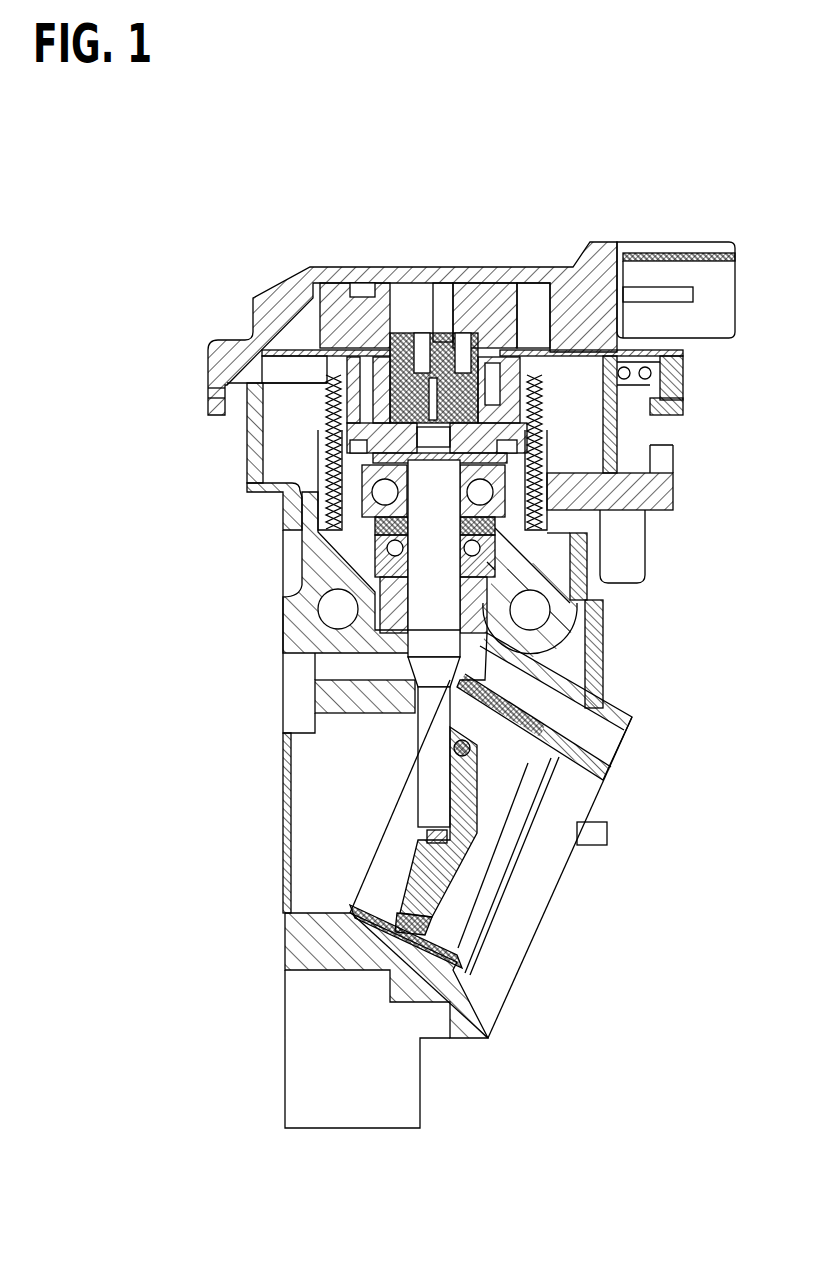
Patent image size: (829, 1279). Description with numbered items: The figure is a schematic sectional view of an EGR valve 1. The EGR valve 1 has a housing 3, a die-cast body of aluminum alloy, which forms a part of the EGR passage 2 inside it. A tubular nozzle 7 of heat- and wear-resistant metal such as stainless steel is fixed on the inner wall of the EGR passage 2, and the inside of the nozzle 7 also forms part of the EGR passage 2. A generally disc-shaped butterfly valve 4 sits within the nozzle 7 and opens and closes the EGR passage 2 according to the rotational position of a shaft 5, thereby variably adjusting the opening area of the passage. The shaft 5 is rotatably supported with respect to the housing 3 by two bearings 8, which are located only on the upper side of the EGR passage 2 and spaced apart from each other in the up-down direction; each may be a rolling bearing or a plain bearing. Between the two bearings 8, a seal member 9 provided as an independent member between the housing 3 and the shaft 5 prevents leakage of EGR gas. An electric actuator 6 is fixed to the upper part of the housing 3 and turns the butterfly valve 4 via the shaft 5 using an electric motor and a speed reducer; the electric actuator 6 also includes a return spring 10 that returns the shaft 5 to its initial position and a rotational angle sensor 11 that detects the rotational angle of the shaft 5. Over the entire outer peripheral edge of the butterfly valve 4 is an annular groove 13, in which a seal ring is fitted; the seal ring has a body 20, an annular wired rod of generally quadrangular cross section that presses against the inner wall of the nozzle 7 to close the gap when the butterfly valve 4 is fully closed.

The EGR valve 1 is at (208, 237).
The EGR passage 2 is at (533, 897).
The housing 3 is at (632, 719).
The butterfly valve 4 is at (490, 953).
The shaft 5 is at (428, 730).
The electric actuator 6 is at (533, 258).
The nozzle 7 is at (557, 843).
The bearings 8 is at (348, 490).
The seal member 9 is at (312, 535).
The return spring 10 is at (330, 440).
The rotational angle sensor 11 is at (368, 333).
The annular groove 13 is at (420, 900).
The body 20 is at (405, 912).